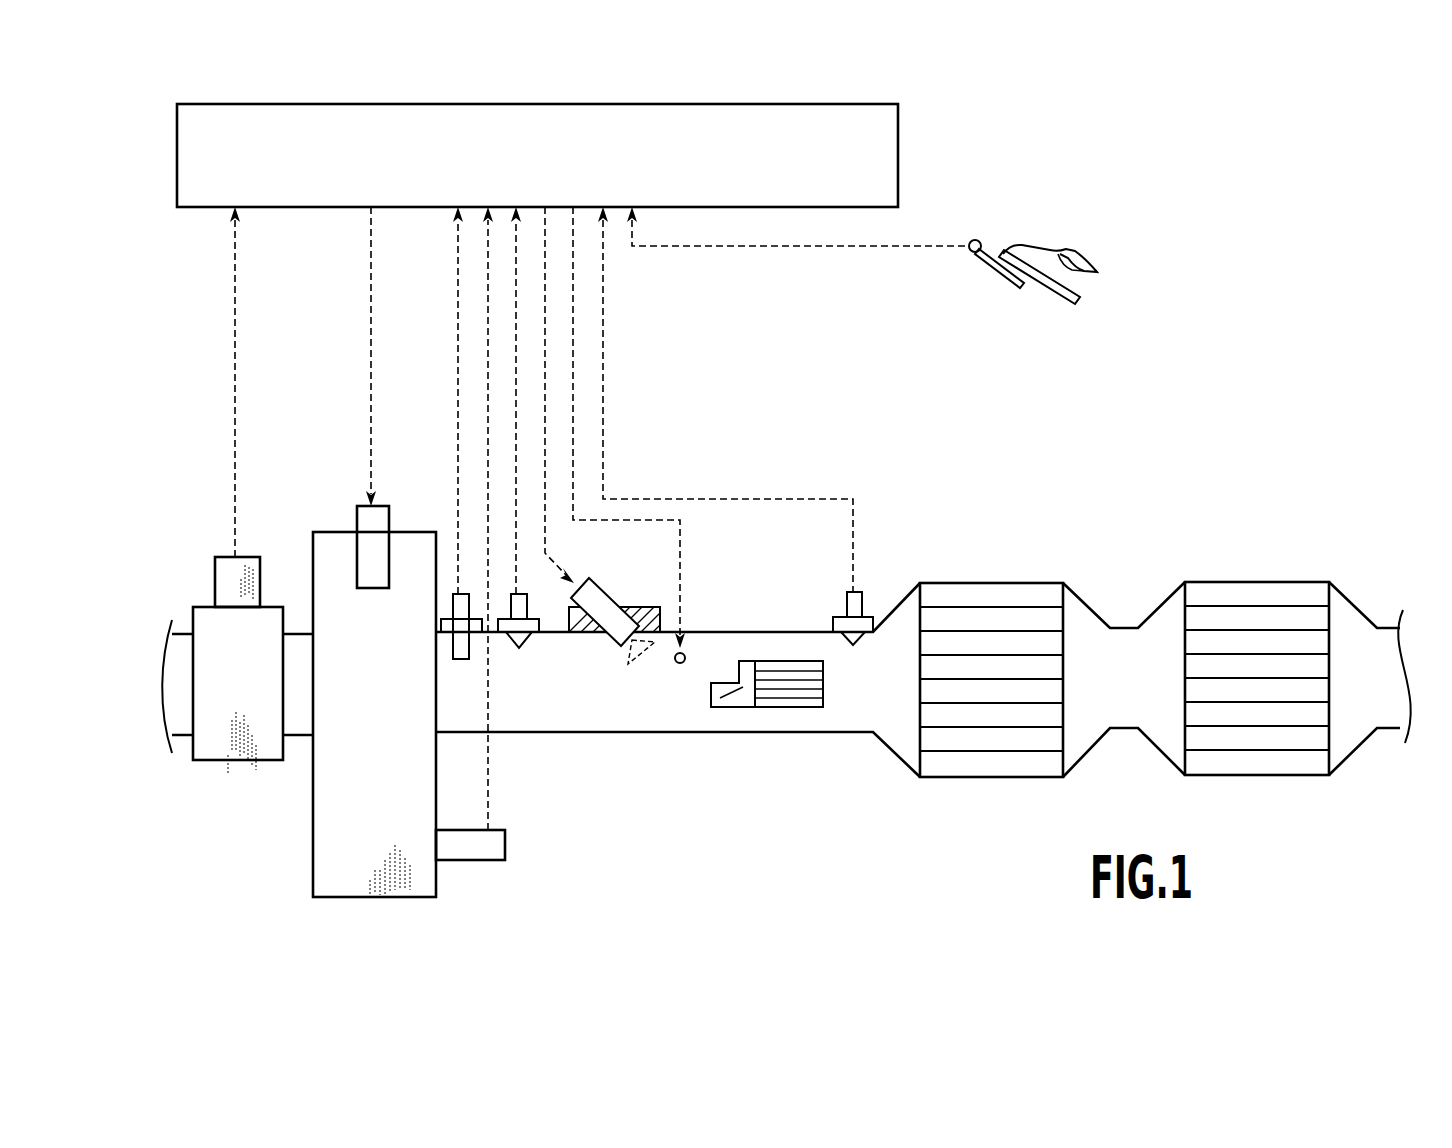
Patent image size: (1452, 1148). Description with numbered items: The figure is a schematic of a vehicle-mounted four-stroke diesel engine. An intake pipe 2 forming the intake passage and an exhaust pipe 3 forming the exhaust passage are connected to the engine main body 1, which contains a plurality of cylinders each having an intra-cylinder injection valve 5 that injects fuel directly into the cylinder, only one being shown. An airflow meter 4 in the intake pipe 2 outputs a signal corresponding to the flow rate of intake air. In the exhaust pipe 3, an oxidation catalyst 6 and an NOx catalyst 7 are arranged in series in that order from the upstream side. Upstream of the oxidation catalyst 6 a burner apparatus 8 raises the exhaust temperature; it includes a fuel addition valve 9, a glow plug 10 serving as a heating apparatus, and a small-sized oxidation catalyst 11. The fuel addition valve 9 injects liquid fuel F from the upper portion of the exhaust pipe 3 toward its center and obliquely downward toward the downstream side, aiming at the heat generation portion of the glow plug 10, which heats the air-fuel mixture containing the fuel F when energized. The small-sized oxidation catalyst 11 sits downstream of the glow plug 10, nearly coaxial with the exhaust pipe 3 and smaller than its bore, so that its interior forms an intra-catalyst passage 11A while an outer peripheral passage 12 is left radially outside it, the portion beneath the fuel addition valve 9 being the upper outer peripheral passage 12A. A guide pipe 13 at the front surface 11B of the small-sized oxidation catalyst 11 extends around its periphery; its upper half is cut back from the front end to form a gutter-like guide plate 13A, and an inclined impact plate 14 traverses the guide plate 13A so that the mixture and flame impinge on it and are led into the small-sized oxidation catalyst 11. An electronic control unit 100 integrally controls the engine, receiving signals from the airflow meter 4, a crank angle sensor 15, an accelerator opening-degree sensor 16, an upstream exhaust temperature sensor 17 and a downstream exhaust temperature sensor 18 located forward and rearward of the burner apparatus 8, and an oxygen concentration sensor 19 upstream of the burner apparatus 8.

The engine main body 1 is at (418, 532).
The intake pipe 2 is at (297, 737).
The exhaust pipe 3 is at (612, 733).
The airflow meter 4 is at (260, 562).
The intra-cylinder injection valve 5 is at (363, 510).
The oxidation catalyst 6 is at (985, 583).
The NOx catalyst 7 is at (1247, 582).
The burner apparatus 8 is at (700, 588).
The fuel addition valve 9 is at (600, 590).
The glow plug 10 is at (686, 657).
The small-sized oxidation catalyst 11 is at (796, 638).
The intra-catalyst passage 11A is at (793, 673).
The front surface 11B is at (752, 708).
The outer peripheral passage 12 is at (751, 669).
The upper outer peripheral passage 12A is at (758, 645).
The guide pipe 13 is at (750, 670).
The guide plate 13A is at (720, 708).
The impact plate 14 is at (713, 692).
The crank angle sensor 15 is at (498, 860).
The accelerator opening-degree sensor 16 is at (976, 240).
The upstream exhaust temperature sensor 17 is at (527, 602).
The downstream exhaust temperature sensor 18 is at (862, 600).
The oxygen concentration sensor 19 is at (469, 608).
The electronic control unit 100 is at (898, 150).
The fuel F is at (627, 667).